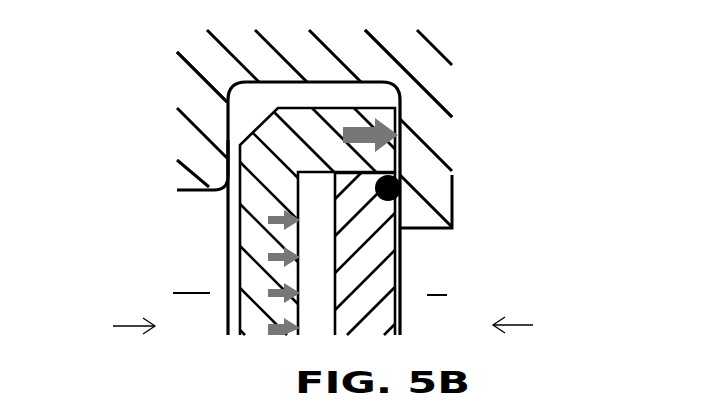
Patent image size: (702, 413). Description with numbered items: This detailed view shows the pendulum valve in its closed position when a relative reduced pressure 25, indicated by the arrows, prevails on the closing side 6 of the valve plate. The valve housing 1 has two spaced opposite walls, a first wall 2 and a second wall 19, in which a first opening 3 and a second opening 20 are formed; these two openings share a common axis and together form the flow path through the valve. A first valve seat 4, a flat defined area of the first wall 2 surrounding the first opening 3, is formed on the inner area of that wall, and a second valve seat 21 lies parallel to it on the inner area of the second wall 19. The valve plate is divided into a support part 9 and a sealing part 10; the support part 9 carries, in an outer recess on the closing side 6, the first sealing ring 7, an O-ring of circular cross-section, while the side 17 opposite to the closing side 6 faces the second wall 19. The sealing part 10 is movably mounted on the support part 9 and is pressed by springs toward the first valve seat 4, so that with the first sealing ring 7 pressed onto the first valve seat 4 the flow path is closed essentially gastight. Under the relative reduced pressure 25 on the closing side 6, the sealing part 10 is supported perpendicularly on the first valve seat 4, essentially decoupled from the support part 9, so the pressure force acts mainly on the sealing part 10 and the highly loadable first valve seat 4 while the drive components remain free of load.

The valve housing 1 is at (477, 62).
The first wall 2 is at (423, 117).
The first opening 3 is at (437, 280).
The first valve seat 4 is at (403, 153).
The closing side 6 is at (529, 330).
The first sealing ring 7 is at (403, 186).
The support part 9 is at (363, 250).
The sealing part 10 is at (250, 252).
The side opposite to the closing side 17 is at (111, 325).
The second wall 19 is at (202, 103).
The second opening 20 is at (192, 277).
The second valve seat 21 is at (226, 162).
The relative reduced pressure 25 is at (272, 218).